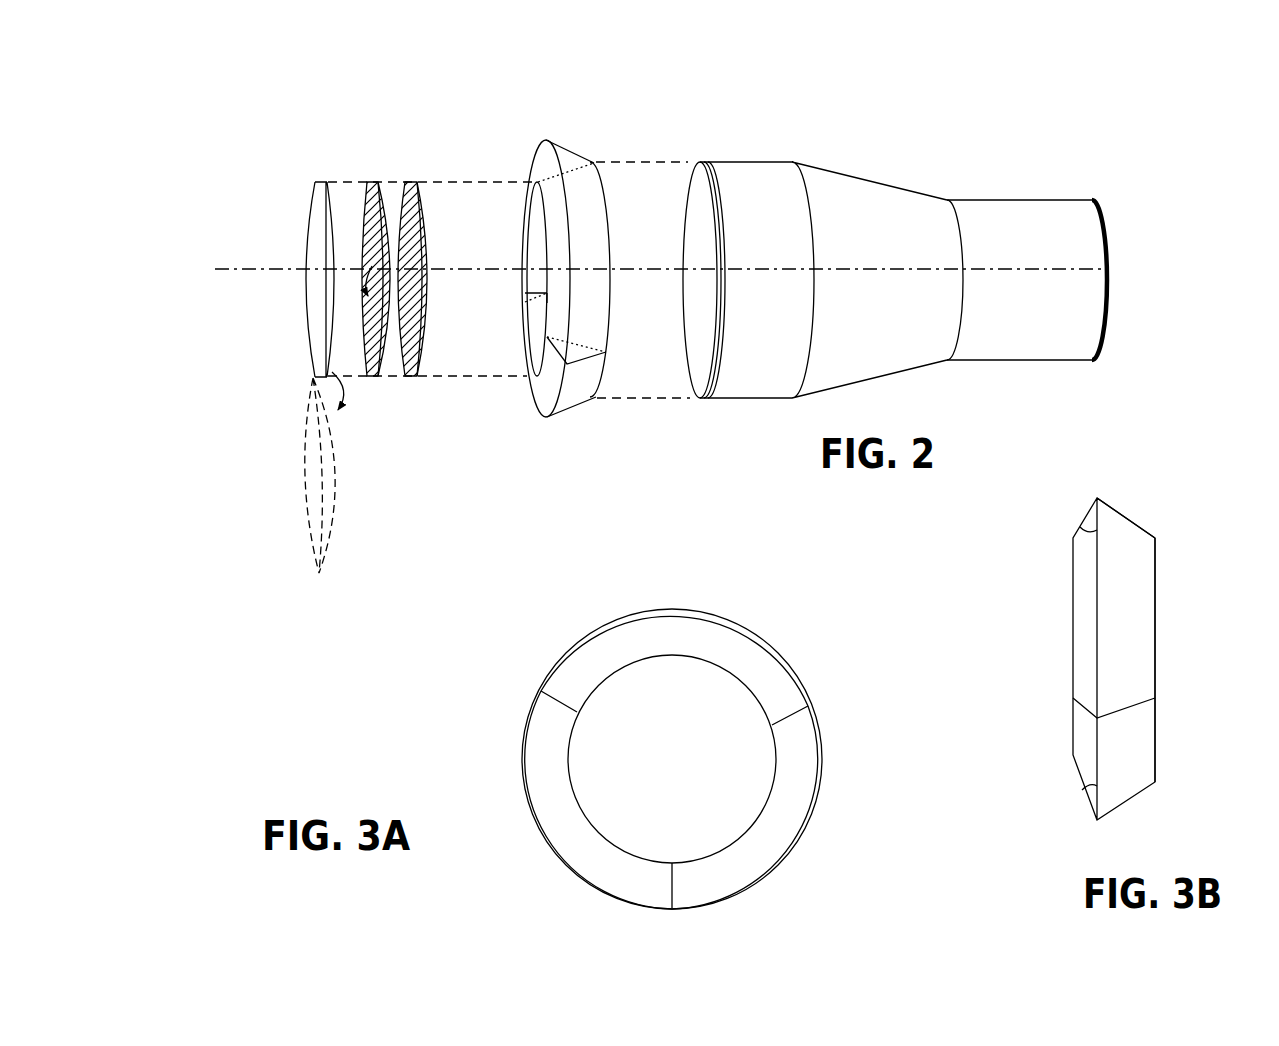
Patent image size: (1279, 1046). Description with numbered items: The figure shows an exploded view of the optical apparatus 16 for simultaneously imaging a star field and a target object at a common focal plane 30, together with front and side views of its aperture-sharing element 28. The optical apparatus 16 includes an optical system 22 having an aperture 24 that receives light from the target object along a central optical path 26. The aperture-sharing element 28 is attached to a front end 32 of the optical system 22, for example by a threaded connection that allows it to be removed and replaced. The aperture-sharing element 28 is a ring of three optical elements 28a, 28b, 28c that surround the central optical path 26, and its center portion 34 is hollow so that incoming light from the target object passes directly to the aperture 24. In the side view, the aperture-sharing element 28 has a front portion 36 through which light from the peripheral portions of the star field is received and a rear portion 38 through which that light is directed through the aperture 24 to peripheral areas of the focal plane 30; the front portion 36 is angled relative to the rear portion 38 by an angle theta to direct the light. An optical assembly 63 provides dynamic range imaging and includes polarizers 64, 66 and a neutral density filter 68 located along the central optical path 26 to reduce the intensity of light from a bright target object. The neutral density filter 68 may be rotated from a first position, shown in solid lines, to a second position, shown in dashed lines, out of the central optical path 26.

In FIG. 2, the optical apparatus 16 is at (1062, 122).
In FIG. 2, the optical system 22 is at (903, 205).
In FIG. 2, the aperture 24 is at (696, 348).
In FIG. 2, the optical path 26 is at (243, 268).
In FIG. 2, the aperture-sharing element 28 is at (578, 267).
In FIG. 3A, the aperture-sharing element 28 is at (731, 569).
In FIG. 3B, the aperture-sharing element 28 is at (1140, 451).
In FIG. 2, the optical element 28a is at (536, 152).
In FIG. 3A, the optical element 28a is at (682, 643).
In FIG. 2, the optical element 28b is at (595, 195).
In FIG. 3A, the optical element 28b is at (792, 817).
In FIG. 3B, the optical element 28b is at (1156, 604).
In FIG. 2, the optical element 28c is at (548, 403).
In FIG. 3A, the optical element 28c is at (572, 832).
In FIG. 3B, the optical element 28c is at (1156, 730).
In FIG. 2, the focal plane 30 is at (1107, 270).
In FIG. 2, the front end 32 is at (713, 170).
In FIG. 2, the center portion 34 is at (538, 249).
In FIG. 3A, the center portion 34 is at (634, 763).
In FIG. 3B, the front portion 36 is at (1079, 514).
In FIG. 3B, the rear portion 38 is at (1140, 513).
In FIG. 2, the optical assembly 63 is at (302, 88).
In FIG. 2, the polarizer 64 is at (373, 182).
In FIG. 2, the polarizer 66 is at (409, 182).
In FIG. 2, the neutral density filter 68 is at (313, 182).